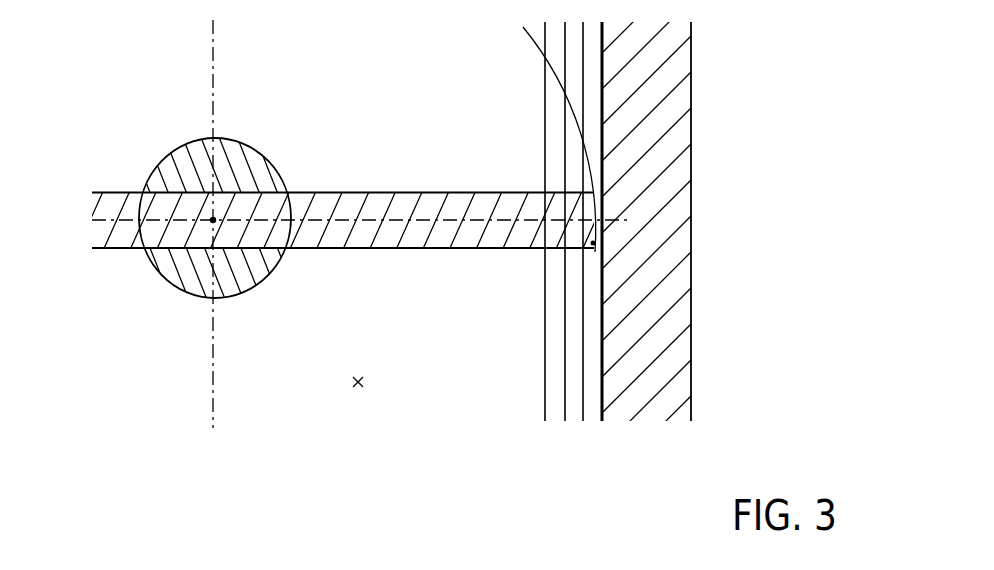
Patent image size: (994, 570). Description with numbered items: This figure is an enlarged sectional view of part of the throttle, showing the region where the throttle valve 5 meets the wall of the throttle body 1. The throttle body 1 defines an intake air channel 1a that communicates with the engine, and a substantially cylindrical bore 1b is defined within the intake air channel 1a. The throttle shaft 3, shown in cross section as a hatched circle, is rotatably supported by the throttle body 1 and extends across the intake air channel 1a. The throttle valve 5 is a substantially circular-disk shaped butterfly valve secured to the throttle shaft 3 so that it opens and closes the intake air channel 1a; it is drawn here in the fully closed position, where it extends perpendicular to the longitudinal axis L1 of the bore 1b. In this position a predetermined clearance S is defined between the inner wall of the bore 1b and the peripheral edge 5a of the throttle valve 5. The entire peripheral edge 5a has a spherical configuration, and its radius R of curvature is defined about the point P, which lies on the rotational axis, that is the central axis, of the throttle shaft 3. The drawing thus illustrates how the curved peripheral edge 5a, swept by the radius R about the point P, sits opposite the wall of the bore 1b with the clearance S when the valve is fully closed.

The throttle body 1 is at (675, 343).
The intake air channel 1a is at (358, 390).
The bore 1b is at (602, 390).
The throttle shaft 3 is at (180, 265).
The throttle valve 5 is at (443, 250).
The peripheral edge 5a is at (594, 250).
The point P is at (213, 220).
The radius of curvature R is at (213, 220).
The clearance S is at (597, 212).
The longitudinal axis L1 is at (217, 244).